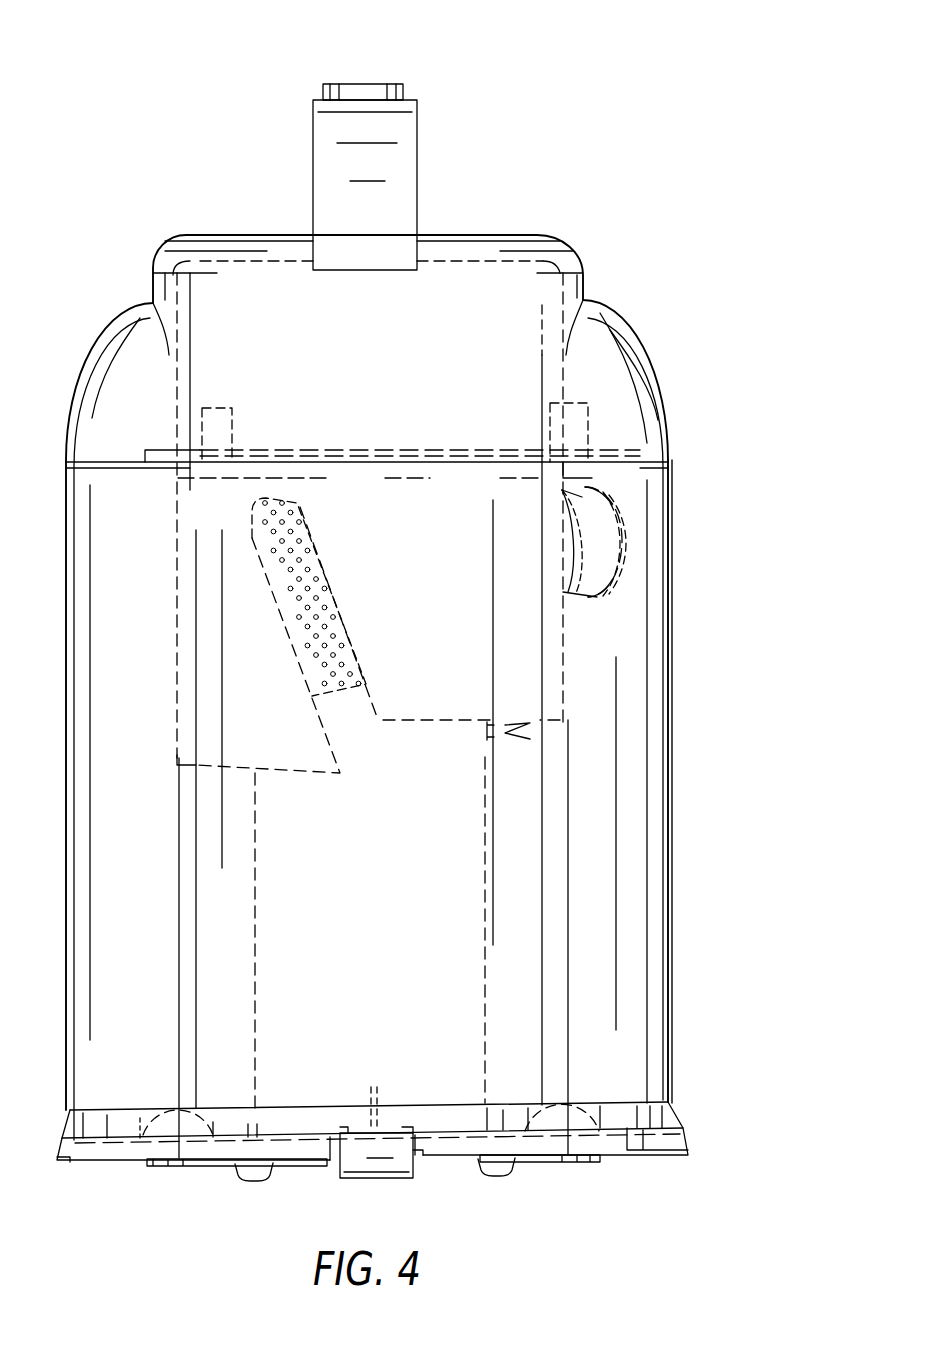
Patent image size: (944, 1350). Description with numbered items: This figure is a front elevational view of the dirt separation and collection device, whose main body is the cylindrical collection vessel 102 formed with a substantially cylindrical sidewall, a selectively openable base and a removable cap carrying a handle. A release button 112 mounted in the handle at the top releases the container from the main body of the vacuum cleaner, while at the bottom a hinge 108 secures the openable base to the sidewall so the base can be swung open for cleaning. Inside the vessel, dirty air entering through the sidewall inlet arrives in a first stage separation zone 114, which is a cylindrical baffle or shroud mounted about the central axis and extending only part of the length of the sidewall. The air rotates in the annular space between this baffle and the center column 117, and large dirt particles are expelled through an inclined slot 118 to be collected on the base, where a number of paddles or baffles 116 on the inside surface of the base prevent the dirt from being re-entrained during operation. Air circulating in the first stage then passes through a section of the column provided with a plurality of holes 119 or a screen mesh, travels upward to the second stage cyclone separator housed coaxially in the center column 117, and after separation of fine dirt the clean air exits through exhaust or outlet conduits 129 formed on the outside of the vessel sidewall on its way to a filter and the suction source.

The cylindrical collection vessel 102 is at (570, 882).
The hinge 108 is at (414, 1170).
The release button 112 is at (365, 84).
The first stage separation zone 114 is at (467, 587).
The paddles or baffles 116 is at (558, 1089).
The center column 117 is at (485, 964).
The inclined slot 118 is at (348, 702).
The holes 119 is at (294, 600).
The exhaust or outlet conduits 129 is at (148, 818).